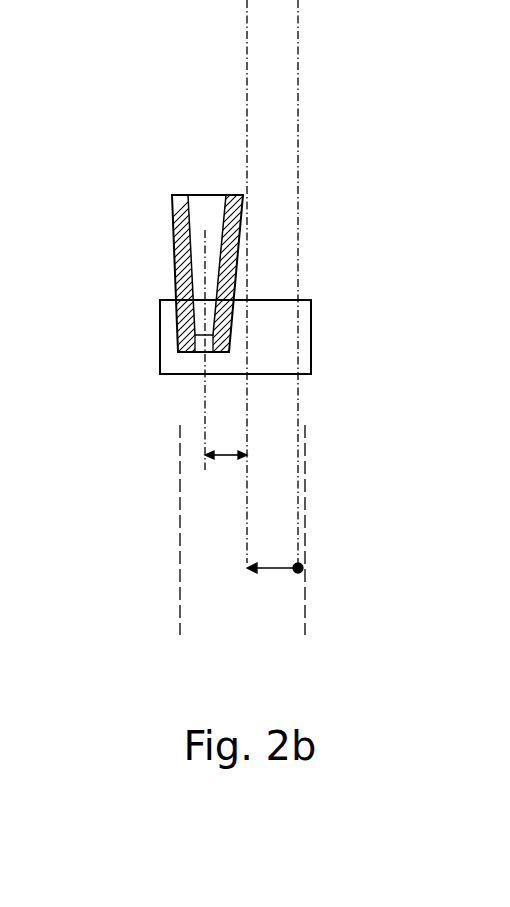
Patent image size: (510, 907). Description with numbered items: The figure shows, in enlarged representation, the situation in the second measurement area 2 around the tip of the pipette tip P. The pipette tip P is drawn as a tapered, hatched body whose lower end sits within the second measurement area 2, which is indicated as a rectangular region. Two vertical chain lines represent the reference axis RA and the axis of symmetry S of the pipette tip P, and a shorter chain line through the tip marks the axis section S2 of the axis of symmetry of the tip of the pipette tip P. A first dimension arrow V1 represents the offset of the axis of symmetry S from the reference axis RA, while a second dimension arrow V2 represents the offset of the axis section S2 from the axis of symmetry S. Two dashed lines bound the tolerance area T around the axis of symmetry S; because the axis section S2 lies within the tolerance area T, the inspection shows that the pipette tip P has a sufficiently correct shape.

The axis of symmetry S is at (249, 55).
The reference axis RA is at (298, 212).
The pipette tip P is at (150, 220).
The second measurement area 2 is at (311, 350).
The axis section S2 is at (204, 393).
The offset of the axis section from the axis of symmetry V2 is at (225, 458).
The offset of the axis of symmetry from the reference axis V1 is at (275, 571).
The tolerance area T is at (180, 615).